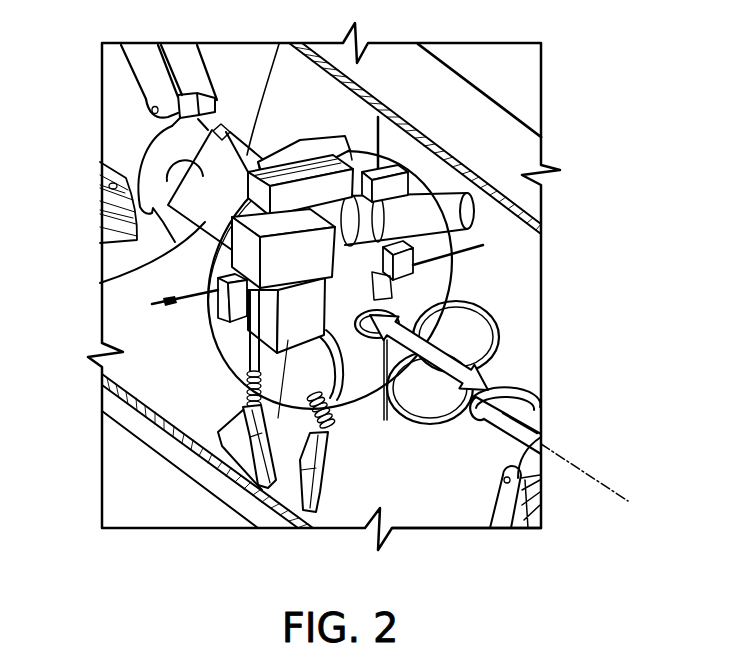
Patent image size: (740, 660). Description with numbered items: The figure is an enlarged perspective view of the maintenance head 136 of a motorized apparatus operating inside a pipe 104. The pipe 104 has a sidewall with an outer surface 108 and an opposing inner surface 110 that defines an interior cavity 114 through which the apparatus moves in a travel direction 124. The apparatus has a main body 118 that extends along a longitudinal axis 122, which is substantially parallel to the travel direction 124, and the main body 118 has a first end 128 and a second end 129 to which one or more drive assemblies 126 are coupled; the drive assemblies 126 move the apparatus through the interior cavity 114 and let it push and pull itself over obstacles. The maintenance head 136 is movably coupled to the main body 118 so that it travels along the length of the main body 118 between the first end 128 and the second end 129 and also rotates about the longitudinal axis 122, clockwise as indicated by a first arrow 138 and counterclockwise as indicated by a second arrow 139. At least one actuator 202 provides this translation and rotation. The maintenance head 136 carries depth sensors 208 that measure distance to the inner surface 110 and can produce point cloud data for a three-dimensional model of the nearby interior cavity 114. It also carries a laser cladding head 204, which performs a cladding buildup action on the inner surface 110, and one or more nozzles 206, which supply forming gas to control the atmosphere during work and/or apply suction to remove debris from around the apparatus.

The pipe 104 is at (518, 73).
The outer surface 108 is at (487, 82).
The inner surface 110 is at (520, 226).
The interior cavity 114 is at (459, 515).
The main body 118 is at (485, 362).
The longitudinal axis 122 is at (622, 493).
The travel direction 124 is at (377, 335).
The drive assemblies 126 is at (117, 95).
The first end 128 is at (163, 159).
The second end 129 is at (548, 418).
The maintenance head 136 is at (505, 290).
The first arrow 138 is at (393, 373).
The second arrow 139 is at (460, 307).
The actuator 202 is at (335, 148).
The laser cladding head 204 is at (267, 320).
The nozzles 206 is at (293, 497).
The depth sensors 208 is at (398, 182).